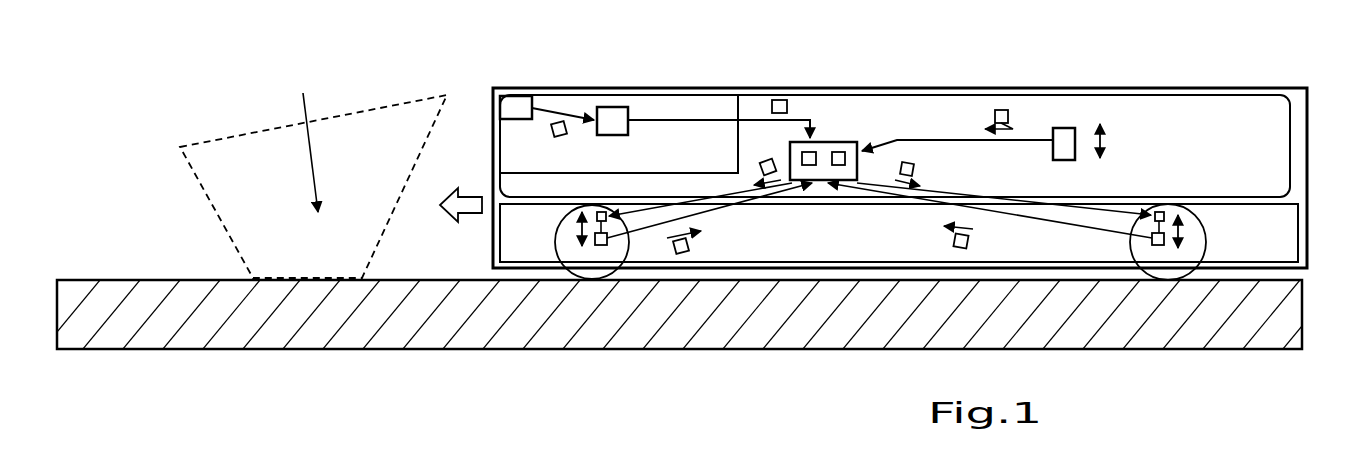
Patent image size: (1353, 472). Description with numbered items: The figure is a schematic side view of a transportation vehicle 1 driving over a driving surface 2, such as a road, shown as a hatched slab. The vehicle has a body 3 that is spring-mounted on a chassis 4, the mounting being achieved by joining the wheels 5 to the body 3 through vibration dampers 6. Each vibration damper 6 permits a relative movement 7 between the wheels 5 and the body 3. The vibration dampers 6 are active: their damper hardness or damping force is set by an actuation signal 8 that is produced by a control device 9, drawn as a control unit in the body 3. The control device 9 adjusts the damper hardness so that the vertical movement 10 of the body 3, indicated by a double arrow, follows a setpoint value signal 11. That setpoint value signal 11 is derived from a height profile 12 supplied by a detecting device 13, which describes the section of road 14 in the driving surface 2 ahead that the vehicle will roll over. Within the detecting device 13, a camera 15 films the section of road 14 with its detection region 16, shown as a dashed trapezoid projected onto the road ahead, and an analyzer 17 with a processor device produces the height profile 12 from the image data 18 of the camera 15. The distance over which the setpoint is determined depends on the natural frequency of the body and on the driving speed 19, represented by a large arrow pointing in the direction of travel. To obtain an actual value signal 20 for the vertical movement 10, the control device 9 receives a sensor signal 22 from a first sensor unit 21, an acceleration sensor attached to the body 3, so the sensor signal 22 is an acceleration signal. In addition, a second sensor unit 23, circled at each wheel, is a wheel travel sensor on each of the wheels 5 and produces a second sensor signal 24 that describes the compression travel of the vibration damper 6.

The transportation vehicle 1 is at (985, 87).
The driving surface 2 is at (171, 277).
The body 3 is at (1102, 95).
The chassis 4 is at (1293, 201).
The wheels 5 is at (555, 240).
The vibration damper 6 is at (600, 212).
The relative movement 7 is at (597, 235).
The actuation signal 8 is at (760, 165).
The control device 9 is at (832, 142).
The vertical movement 10 is at (1105, 138).
The setpoint value signal 11 is at (802, 158).
The height profile 12 is at (781, 100).
The detecting device 13 is at (740, 101).
The section of road 14 is at (303, 137).
The camera 15 is at (532, 108).
The detection region 16 is at (447, 93).
The analyzer 17 is at (612, 107).
The image data 18 is at (568, 133).
The driving speed 19 is at (468, 222).
The actual value signal 20 is at (840, 152).
The first sensor unit 21 is at (1053, 155).
The sensor signal 22 is at (1008, 116).
The second sensor unit 23 is at (610, 272).
The second sensor signal 24 is at (690, 244).